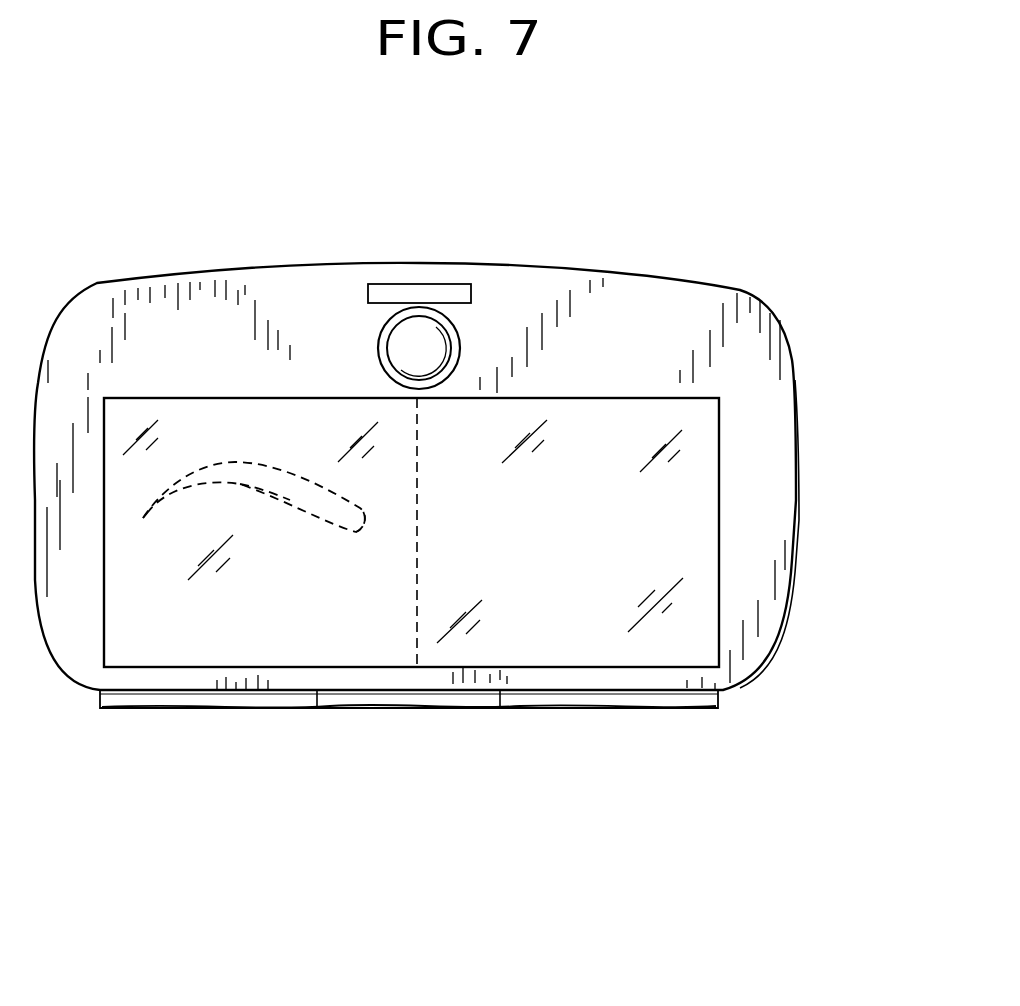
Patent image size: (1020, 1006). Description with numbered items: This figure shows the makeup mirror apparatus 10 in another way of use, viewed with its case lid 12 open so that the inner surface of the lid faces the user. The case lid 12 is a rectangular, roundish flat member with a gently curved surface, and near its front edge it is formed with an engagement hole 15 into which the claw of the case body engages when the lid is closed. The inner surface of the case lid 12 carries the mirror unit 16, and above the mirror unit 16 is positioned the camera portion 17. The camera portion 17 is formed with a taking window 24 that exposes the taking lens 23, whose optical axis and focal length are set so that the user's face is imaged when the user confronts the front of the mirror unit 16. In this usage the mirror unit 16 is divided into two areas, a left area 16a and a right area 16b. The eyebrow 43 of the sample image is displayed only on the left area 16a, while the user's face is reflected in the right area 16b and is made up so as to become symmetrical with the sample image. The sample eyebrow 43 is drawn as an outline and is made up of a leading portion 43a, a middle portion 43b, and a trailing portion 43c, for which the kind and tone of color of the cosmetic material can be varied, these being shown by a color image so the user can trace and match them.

The makeup mirror apparatus 10 is at (108, 238).
The case lid 12 is at (797, 407).
The engagement hole 15 is at (368, 297).
The mirror unit 16 is at (409, 627).
The left area 16a is at (328, 642).
The right area 16b is at (500, 642).
The camera portion 17 is at (462, 349).
The taking lens 23 is at (425, 363).
The taking window 24 is at (387, 347).
The eyebrow 43 is at (215, 428).
The leading portion 43a is at (366, 523).
The middle portion 43b is at (264, 488).
The trailing portion 43c is at (143, 520).